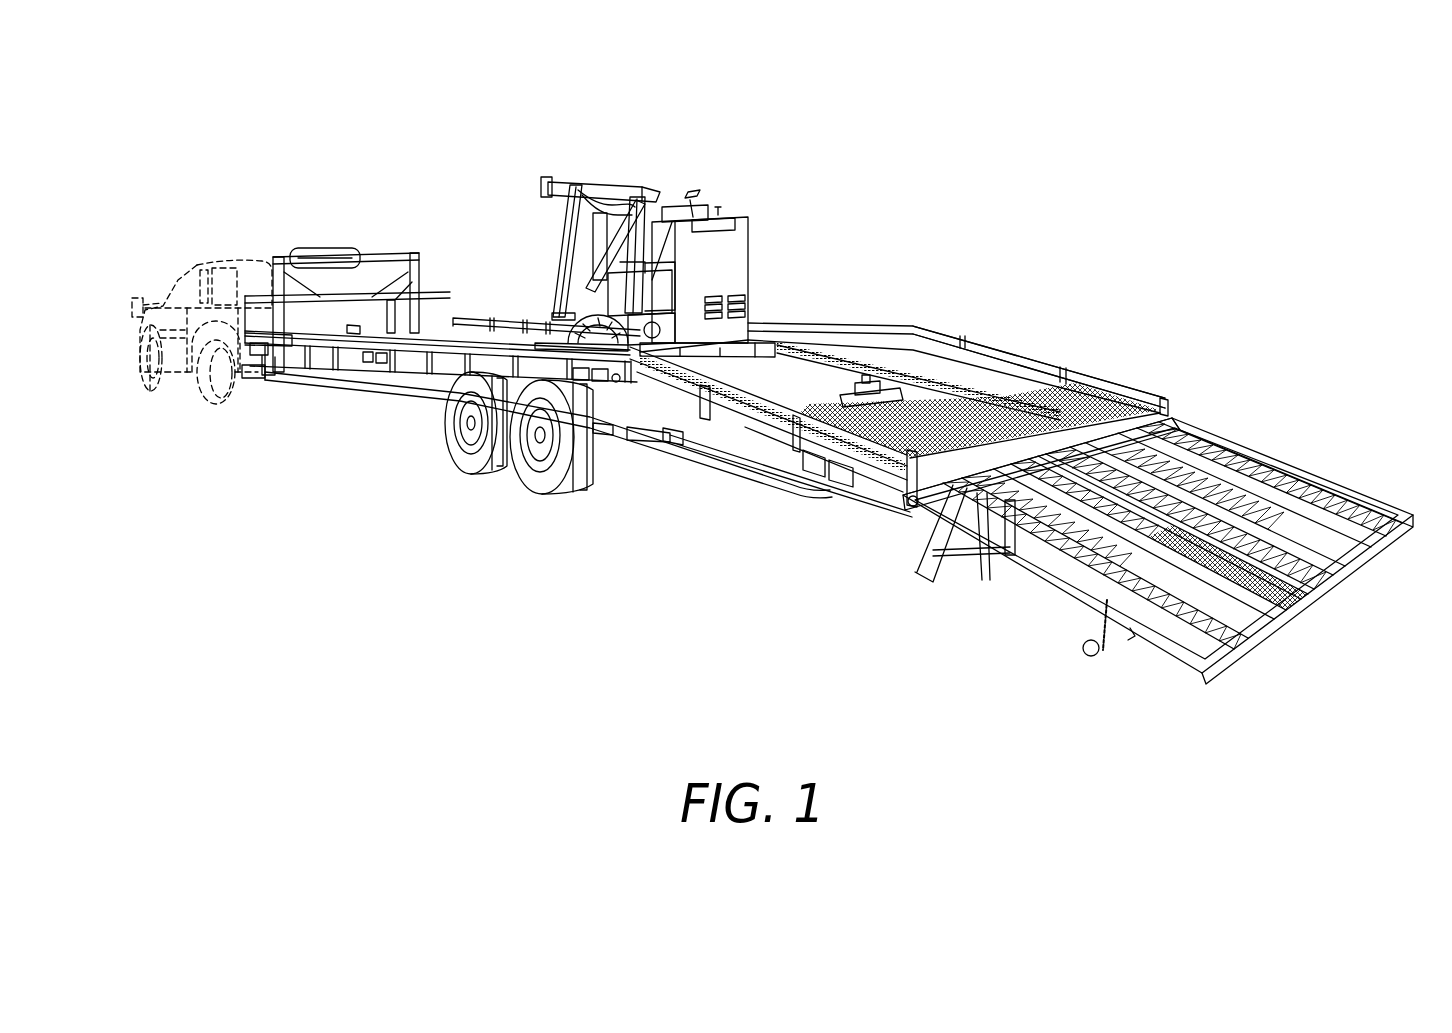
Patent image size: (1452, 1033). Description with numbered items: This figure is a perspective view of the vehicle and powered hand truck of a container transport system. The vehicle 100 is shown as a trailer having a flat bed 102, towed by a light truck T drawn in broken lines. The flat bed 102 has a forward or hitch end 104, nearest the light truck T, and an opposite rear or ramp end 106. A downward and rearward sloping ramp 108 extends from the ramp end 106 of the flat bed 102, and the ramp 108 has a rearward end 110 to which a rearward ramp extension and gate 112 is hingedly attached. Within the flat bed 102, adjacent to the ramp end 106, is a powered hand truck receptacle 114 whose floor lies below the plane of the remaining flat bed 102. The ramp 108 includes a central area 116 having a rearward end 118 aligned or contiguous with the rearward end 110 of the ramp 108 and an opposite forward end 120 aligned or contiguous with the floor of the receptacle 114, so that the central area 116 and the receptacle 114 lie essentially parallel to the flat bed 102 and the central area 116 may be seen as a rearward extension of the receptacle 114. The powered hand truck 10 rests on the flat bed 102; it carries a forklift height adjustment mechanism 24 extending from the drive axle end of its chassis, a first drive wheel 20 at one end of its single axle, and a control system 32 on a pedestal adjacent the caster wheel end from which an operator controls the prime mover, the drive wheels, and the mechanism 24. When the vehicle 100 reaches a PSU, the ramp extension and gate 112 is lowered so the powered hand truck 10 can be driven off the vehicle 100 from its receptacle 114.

The light truck T is at (212, 232).
The powered hand truck 10 is at (645, 212).
The first drive wheel 20 is at (577, 307).
The forklift height adjustment mechanism 24 is at (543, 210).
The control system 32 is at (705, 155).
The vehicle 100 is at (829, 426).
The flat bed 102 is at (480, 337).
The hitch end 104 is at (438, 262).
The ramp end 106 is at (904, 342).
The ramp 108 is at (1003, 372).
The rearward end 110 is at (933, 524).
The rearward ramp extension and gate 112 is at (1267, 442).
The powered hand truck receptacle 114 is at (783, 372).
The central area 116 is at (930, 417).
The rearward end 118 is at (1067, 433).
The forward end 120 is at (845, 395).